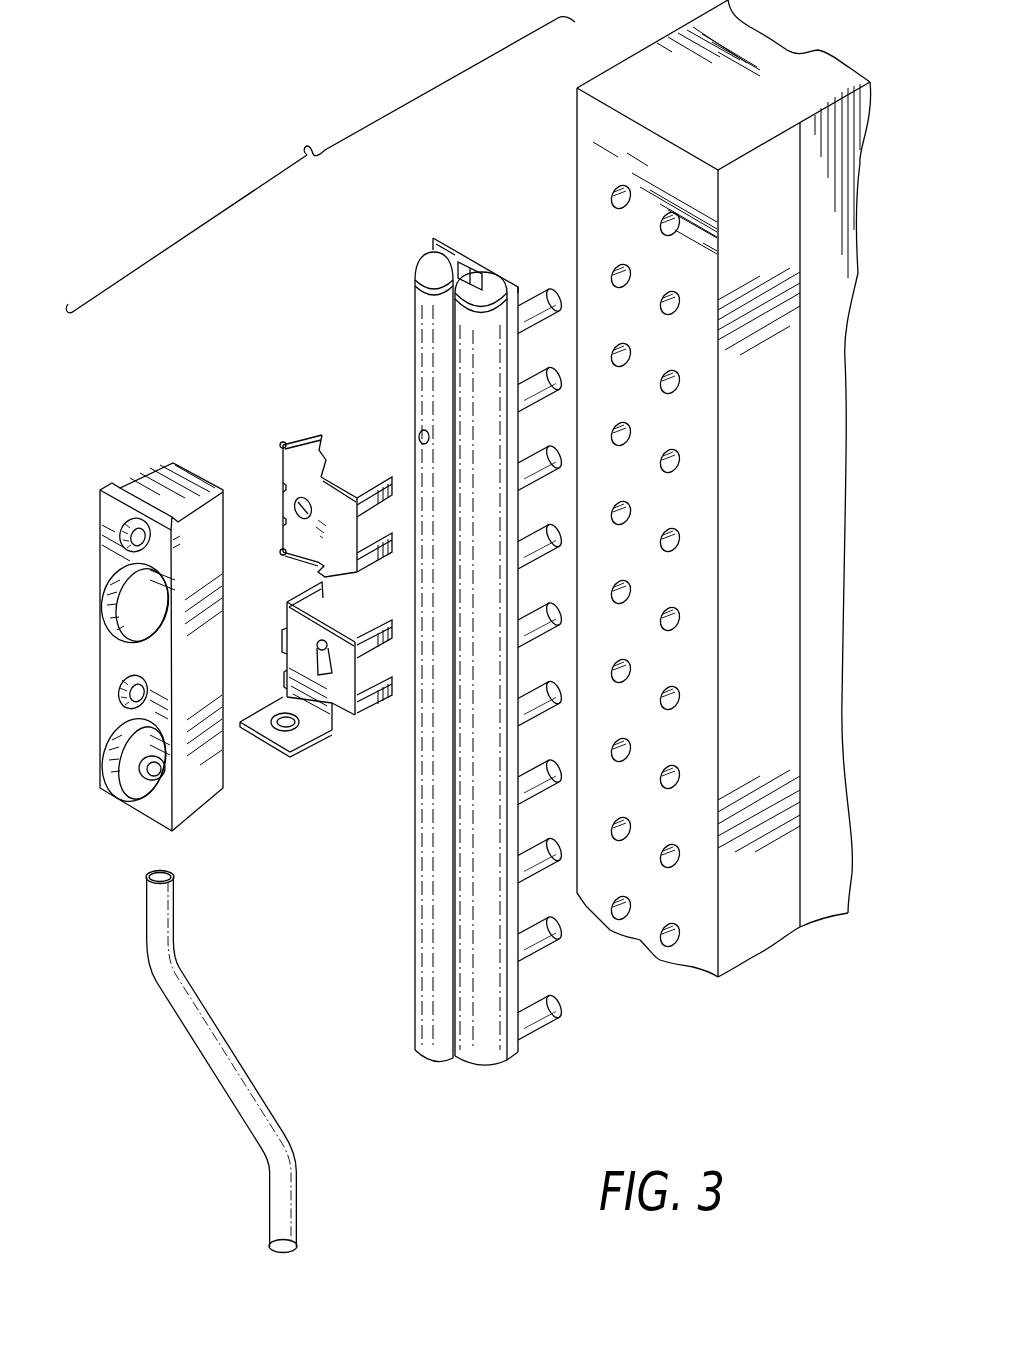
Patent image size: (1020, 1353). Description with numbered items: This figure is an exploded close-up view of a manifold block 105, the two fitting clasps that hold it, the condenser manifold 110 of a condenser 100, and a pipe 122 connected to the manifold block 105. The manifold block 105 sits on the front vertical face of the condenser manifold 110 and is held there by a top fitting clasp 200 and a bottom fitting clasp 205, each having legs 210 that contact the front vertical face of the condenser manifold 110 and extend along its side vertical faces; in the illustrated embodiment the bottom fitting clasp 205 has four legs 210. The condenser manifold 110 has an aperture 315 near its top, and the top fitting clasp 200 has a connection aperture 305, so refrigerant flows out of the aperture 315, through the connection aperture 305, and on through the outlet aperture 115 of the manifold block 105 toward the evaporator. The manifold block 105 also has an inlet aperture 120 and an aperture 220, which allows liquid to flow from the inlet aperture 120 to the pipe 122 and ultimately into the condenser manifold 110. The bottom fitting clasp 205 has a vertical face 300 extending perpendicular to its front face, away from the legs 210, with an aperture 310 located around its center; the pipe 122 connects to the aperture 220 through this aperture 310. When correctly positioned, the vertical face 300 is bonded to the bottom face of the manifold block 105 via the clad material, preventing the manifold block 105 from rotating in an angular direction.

The condenser 100 is at (790, 967).
The manifold block 105 is at (137, 638).
The condenser manifold 110 is at (424, 278).
The outlet aperture 115 is at (145, 598).
The inlet aperture 120 is at (142, 750).
The pipe 122 is at (193, 1017).
The top fitting clasp 200 is at (294, 468).
The bottom fitting clasp 205 is at (332, 738).
The legs 210 is at (377, 480).
The aperture 220 is at (148, 770).
The vertical face 300 is at (285, 769).
The connection aperture 305 is at (300, 517).
The aperture 310 is at (273, 703).
The aperture 315 is at (421, 432).